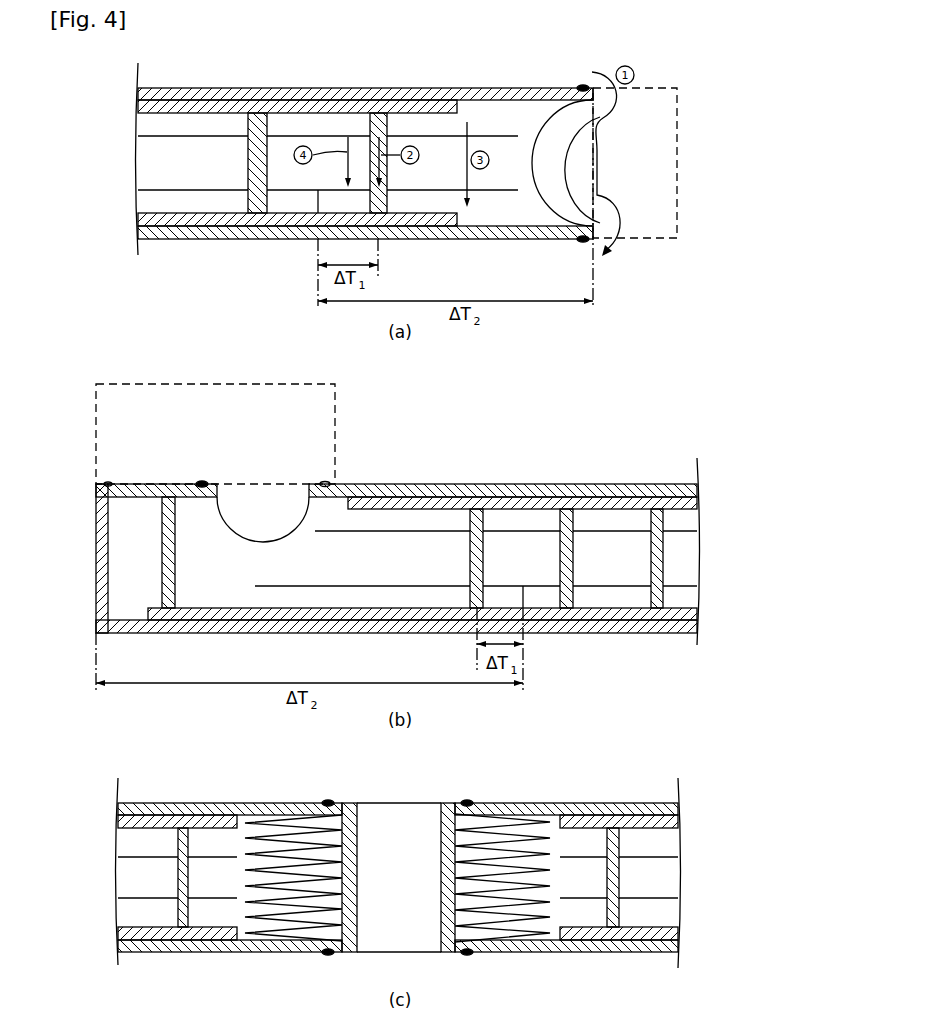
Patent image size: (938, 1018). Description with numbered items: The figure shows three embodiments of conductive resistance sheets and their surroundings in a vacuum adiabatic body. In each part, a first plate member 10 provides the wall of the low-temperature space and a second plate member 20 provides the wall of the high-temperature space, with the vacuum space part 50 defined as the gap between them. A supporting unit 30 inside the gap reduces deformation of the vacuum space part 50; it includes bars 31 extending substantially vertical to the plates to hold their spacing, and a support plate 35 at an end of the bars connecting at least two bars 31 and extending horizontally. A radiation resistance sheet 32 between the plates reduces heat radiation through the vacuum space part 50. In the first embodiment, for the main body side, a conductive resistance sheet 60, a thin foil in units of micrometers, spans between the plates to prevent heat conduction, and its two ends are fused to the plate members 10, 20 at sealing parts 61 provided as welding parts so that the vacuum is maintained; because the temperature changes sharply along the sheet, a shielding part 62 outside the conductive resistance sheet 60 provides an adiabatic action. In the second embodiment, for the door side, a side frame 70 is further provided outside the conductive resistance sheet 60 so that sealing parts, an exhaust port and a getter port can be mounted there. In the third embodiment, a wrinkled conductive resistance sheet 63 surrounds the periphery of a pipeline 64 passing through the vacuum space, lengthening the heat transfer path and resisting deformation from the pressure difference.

The first plate member 10 is at (180, 239).
The second plate member 20 is at (457, 88).
The supporting unit 30 is at (360, 118).
The bar 31 is at (477, 520).
The radiation resistance sheet 32 is at (507, 134).
The support plate 35 is at (370, 107).
The vacuum space part 50 is at (687, 557).
The conductive resistance sheet 60 is at (533, 175).
The sealing part 61 is at (583, 86).
The shielding part 62 is at (677, 112).
The wrinkled conductive resistance sheet 63 is at (287, 820).
The pipeline 64 is at (441, 822).
The side frame 70 is at (152, 484).